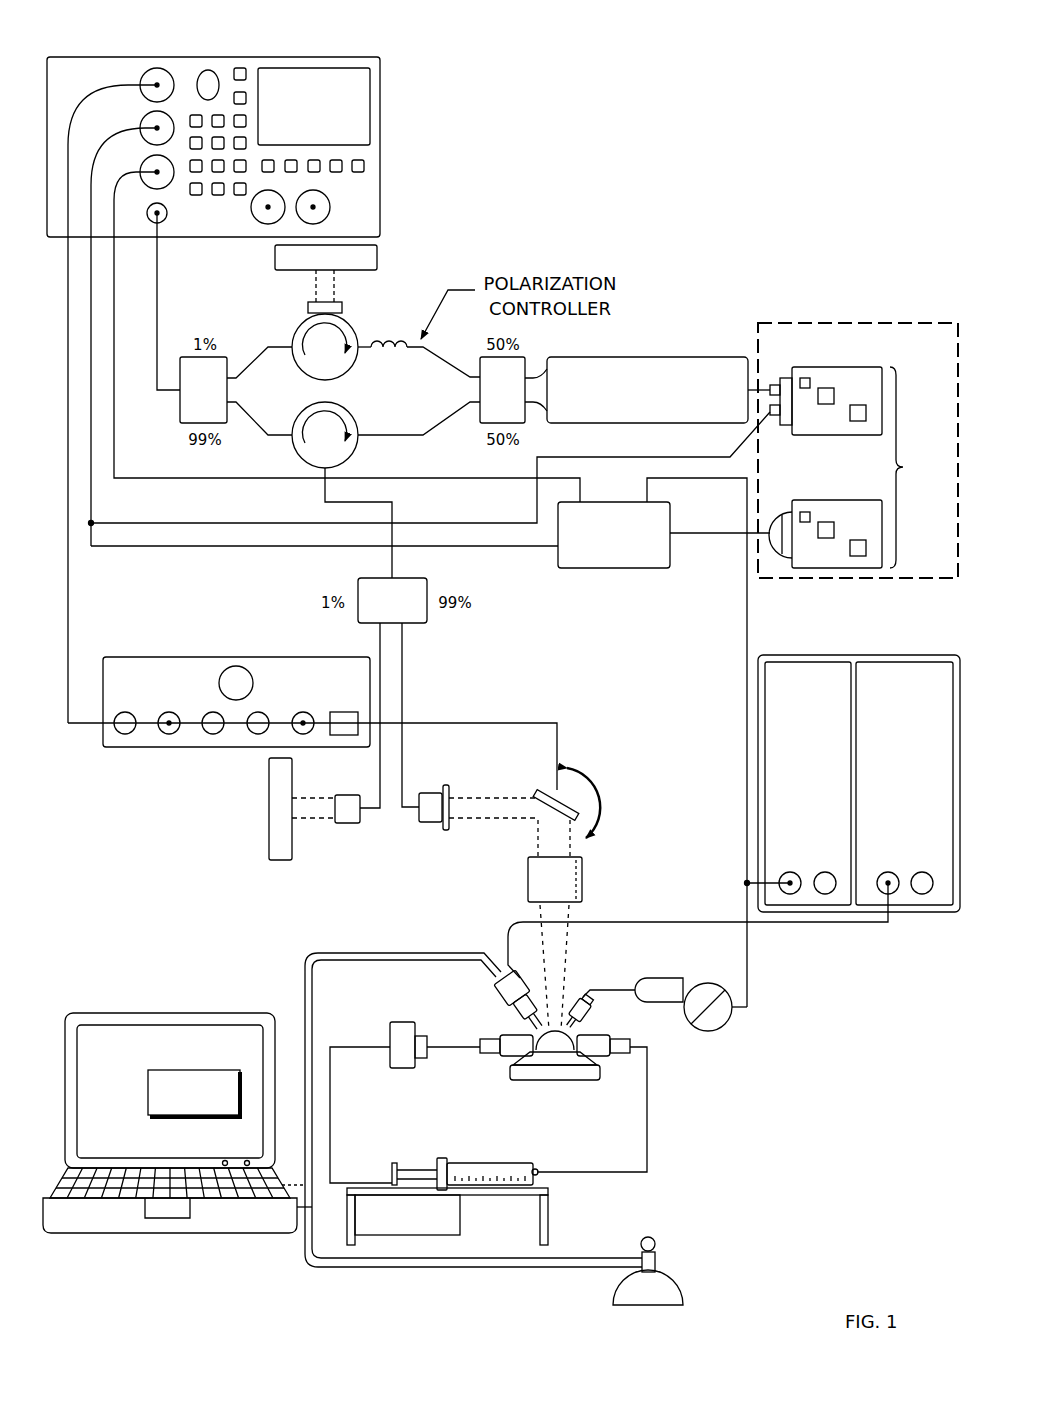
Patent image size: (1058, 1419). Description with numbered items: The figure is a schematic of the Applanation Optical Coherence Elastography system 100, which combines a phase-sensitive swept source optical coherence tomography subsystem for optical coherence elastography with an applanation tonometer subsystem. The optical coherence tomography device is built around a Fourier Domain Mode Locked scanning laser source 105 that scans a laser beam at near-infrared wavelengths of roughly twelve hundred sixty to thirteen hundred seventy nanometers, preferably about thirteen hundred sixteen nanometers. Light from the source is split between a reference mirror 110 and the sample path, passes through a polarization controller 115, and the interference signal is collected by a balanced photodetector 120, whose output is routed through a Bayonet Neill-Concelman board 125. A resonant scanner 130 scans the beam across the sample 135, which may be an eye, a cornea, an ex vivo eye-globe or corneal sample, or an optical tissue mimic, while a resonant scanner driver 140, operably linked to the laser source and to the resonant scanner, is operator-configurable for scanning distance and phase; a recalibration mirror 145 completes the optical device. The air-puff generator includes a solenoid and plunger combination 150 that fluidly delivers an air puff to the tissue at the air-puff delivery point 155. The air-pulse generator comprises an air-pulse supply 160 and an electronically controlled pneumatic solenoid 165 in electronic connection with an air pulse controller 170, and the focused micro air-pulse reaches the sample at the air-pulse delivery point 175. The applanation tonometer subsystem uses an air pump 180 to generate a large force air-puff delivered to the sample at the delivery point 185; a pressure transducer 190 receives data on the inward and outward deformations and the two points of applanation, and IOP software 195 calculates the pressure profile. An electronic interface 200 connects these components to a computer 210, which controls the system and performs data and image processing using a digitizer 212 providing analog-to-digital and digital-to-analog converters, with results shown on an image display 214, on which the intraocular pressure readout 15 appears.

The Applanation Optical Coherence Elastography (Appl-OCE) system 100 is at (720, 126).
The Fourier Domain Mode Locked (FDML) scanning laser source 105 is at (210, 242).
The reference mirror 110 is at (382, 254).
The polarization controller 115 is at (282, 344).
The balanced photodetector 120 is at (645, 357).
The Bayonet Neill-Concelman (BNC) board 125 is at (616, 570).
The resonant scanner 130 is at (598, 797).
The sample 135 is at (565, 1083).
The resonant scanner driver 140 is at (190, 750).
The recalibration mirror 145 is at (282, 862).
The solenoid and plunger combination 150 is at (712, 1033).
The air-puff delivery 155 is at (592, 1013).
The air-pulse supply 160 is at (683, 1282).
The electronically controlled pneumatic solenoid 165 is at (503, 997).
The air pulse controller 170 is at (903, 916).
The air-pulse delivery 175 is at (465, 953).
The air pump 180 is at (405, 1237).
The large force air-puff delivery 185 is at (523, 1084).
The pressure transducer 190 is at (398, 1020).
The IOP software 195 is at (121, 1270).
The electronic interface 200 is at (838, 306).
The computer 210 is at (872, 321).
The digitizer 212 is at (861, 467).
The image display 214 is at (167, 1013).
The IOP display 15 is at (148, 1093).